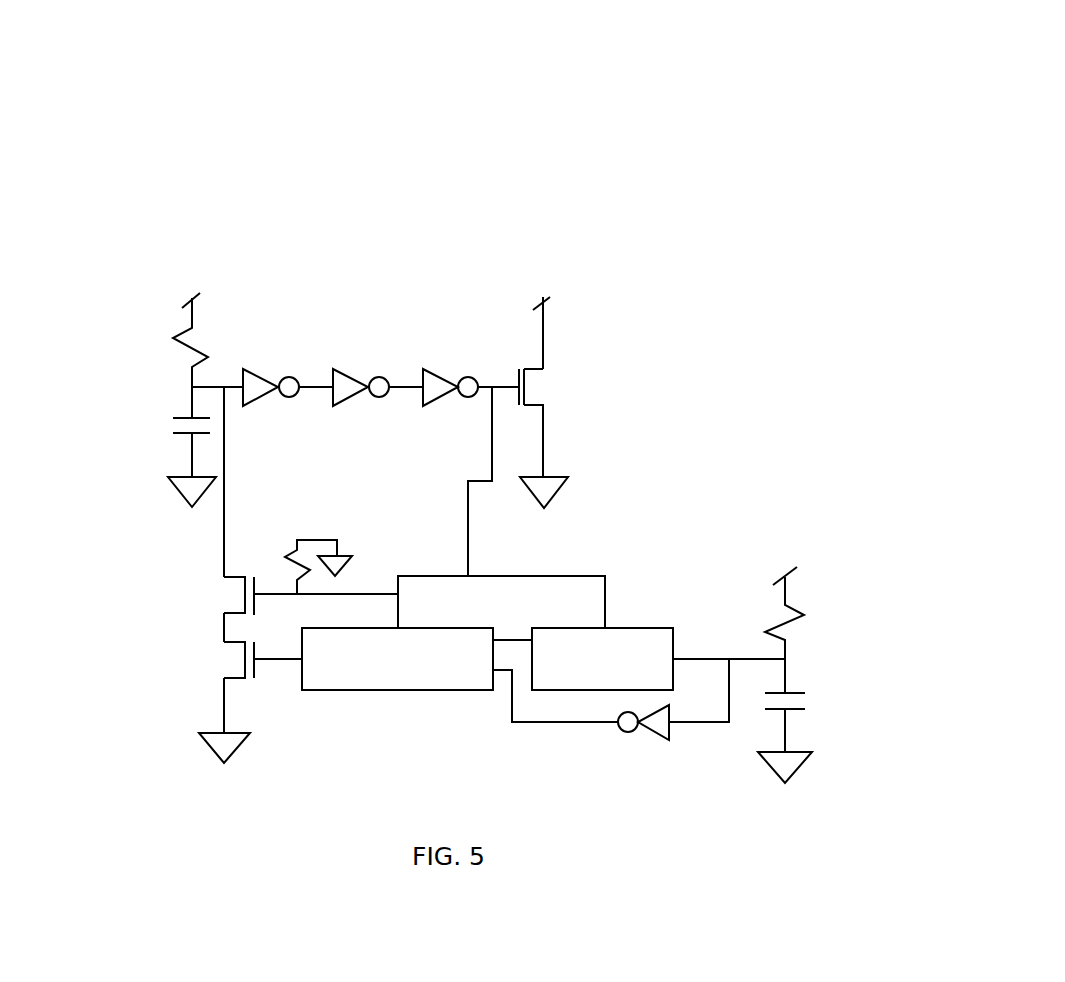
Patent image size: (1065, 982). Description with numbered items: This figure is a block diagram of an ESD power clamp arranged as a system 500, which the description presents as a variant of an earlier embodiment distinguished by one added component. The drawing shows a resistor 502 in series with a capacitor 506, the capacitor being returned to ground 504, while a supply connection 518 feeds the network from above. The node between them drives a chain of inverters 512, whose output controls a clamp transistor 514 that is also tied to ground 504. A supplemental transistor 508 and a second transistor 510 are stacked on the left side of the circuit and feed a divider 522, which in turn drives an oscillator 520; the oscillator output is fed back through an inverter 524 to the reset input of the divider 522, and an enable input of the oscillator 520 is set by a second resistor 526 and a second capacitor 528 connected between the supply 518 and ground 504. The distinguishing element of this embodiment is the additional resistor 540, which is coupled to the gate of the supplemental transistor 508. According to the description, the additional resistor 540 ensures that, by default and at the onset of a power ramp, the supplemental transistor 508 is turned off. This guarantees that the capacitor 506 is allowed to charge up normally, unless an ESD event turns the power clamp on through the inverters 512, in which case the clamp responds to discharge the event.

The system 500 is at (682, 177).
The resistor 502 is at (155, 343).
The ground 504 is at (155, 492).
The capacitor 506 is at (155, 425).
The supplemental transistor 508 is at (217, 593).
The transistor 510 is at (215, 662).
The inverters 512 is at (385, 355).
The transistor 514 is at (572, 385).
The supply voltage 518 is at (493, 416).
The oscillator 520 is at (635, 623).
The divider 522 is at (425, 710).
The inverter 524 is at (643, 740).
The resistor 526 is at (827, 618).
The capacitor 528 is at (827, 710).
The additional resistor 540 is at (313, 527).